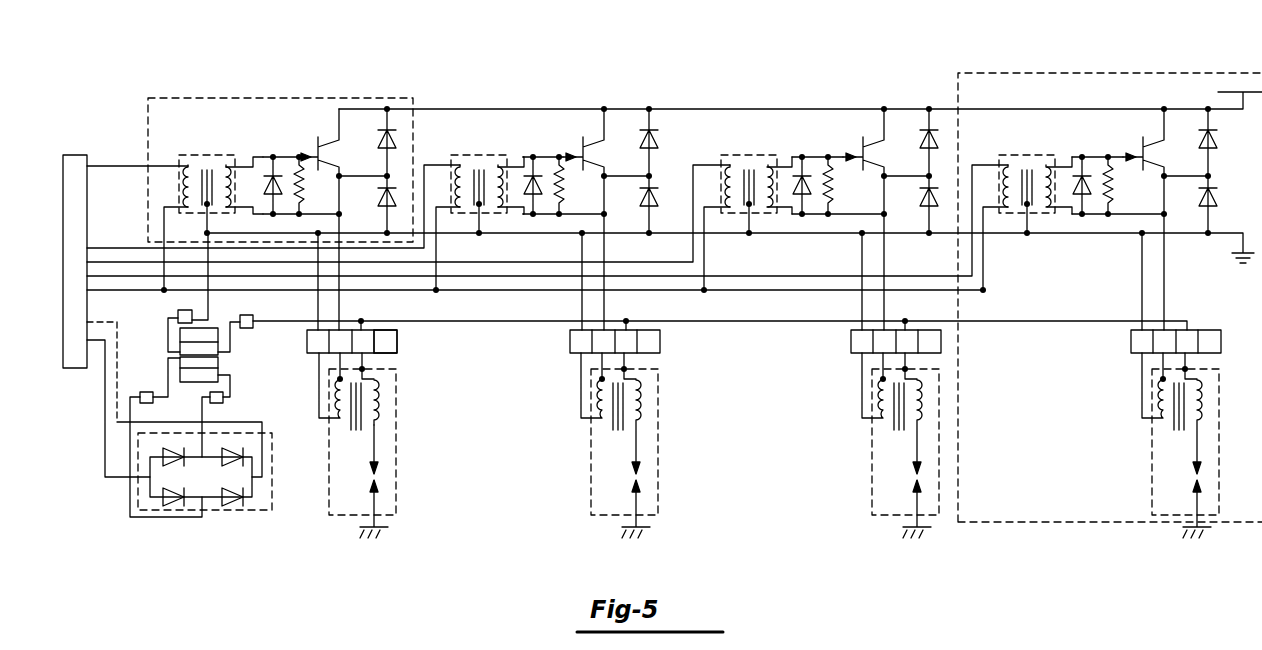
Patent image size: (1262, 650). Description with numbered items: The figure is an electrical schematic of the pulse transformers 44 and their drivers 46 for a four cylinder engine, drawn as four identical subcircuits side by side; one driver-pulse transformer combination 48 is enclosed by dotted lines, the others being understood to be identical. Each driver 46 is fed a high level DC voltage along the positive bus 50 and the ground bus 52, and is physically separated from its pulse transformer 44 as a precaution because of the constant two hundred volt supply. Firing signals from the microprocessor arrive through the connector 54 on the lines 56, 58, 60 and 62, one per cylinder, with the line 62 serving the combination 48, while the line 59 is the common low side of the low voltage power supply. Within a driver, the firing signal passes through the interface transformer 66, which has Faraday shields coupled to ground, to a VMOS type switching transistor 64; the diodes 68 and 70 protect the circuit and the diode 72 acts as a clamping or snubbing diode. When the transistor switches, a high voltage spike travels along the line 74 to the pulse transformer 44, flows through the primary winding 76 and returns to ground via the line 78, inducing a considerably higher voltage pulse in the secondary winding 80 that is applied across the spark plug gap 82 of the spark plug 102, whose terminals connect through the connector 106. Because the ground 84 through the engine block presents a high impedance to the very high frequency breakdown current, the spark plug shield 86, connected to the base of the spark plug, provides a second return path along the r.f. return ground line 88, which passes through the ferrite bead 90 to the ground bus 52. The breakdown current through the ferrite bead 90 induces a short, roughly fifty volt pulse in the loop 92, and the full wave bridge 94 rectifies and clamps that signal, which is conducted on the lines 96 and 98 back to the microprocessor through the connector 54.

The pulse transformer 44 is at (753, 445).
The driver 46 is at (413, 128).
The driver-pulse transformer combination 48 is at (1103, 73).
The positive bus 50 is at (578, 109).
The ground bus 52 is at (535, 234).
The connector 54 is at (93, 154).
The line 56 is at (138, 180).
The line 58 is at (130, 244).
The line 59 is at (190, 310).
The line 60 is at (100, 265).
The line 62 is at (123, 278).
The switching transistor 64 is at (331, 139).
The interface transformer 66 is at (183, 157).
The diode 68 is at (394, 150).
The diode 70 is at (266, 192).
The diode 72 is at (385, 200).
The line 74 is at (342, 308).
The primary winding 76 is at (337, 398).
The line 78 is at (317, 311).
The secondary winding 80 is at (373, 403).
The spark plug gap 82 is at (378, 483).
The ground 84 is at (382, 535).
The spark plug shield 86 is at (592, 482).
The r.f. return ground line 88 is at (510, 322).
The ferrite bead 90 is at (222, 375).
The loop 92 is at (237, 354).
The full wave bridge 94 is at (242, 512).
The line 96 is at (122, 387).
The line 98 is at (105, 425).
The spark plug 102 is at (640, 498).
The connector 106 is at (397, 350).